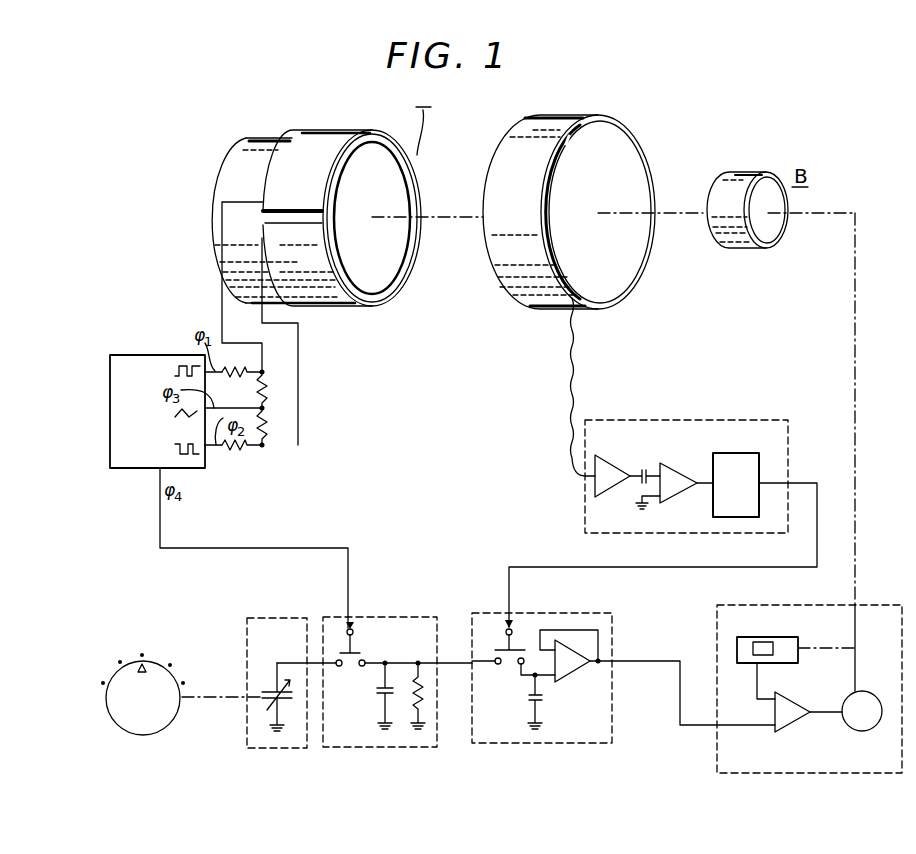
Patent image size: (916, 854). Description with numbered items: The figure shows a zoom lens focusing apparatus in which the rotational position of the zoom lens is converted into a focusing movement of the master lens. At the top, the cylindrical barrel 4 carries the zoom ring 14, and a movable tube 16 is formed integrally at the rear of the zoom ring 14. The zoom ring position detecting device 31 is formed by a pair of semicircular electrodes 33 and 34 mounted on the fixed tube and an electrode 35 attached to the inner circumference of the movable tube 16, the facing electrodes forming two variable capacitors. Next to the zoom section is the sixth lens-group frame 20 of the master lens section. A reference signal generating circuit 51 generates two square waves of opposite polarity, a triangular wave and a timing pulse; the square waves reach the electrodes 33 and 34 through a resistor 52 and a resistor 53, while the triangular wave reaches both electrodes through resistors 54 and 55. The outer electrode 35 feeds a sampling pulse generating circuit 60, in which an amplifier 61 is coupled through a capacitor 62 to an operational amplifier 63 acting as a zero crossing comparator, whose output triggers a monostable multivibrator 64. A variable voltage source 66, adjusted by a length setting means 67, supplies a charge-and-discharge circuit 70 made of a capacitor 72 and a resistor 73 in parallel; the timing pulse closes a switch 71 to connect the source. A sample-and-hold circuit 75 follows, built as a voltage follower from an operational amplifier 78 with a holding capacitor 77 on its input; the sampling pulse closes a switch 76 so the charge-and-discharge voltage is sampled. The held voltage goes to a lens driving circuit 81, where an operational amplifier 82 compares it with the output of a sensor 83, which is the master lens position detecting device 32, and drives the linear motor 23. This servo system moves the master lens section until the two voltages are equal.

The barrel 4 is at (270, 136).
The electrode 33 is at (328, 130).
The electrode 34 is at (332, 310).
The zoom ring position detecting device 31 is at (347, 264).
The zoom ring 14 is at (544, 116).
The movable tube 16 is at (571, 116).
The electrode 35 is at (567, 150).
The sixth lens-group frame 20 is at (741, 173).
The reference signal generating circuit 51 is at (150, 355).
The resistor 52 is at (240, 380).
The resistor 53 is at (240, 452).
The resistor 54 is at (267, 393).
The resistor 55 is at (280, 432).
The sampling pulse generating circuit 60 is at (680, 415).
The amplifier 61 is at (612, 456).
The capacitor 62 is at (643, 469).
The operational amplifier 63 is at (673, 462).
The monostable multivibrator 64 is at (735, 453).
The variable voltage source 66 is at (280, 617).
The length setting means 67 is at (143, 735).
The charge-and-discharge circuit 70 is at (397, 664).
The switch 71 is at (360, 654).
The capacitor 72 is at (376, 690).
The resistor 73 is at (424, 690).
The sample-and-hold circuit 75 is at (542, 664).
The switch 76 is at (498, 650).
The holding capacitor 77 is at (528, 697).
The operational amplifier 78 is at (578, 667).
The lens driving circuit 81 is at (791, 676).
The operational amplifier 82 is at (802, 720).
The sensor 83 is at (747, 637).
The master lens position detecting device 32 is at (737, 646).
The linear motor 23 is at (846, 696).